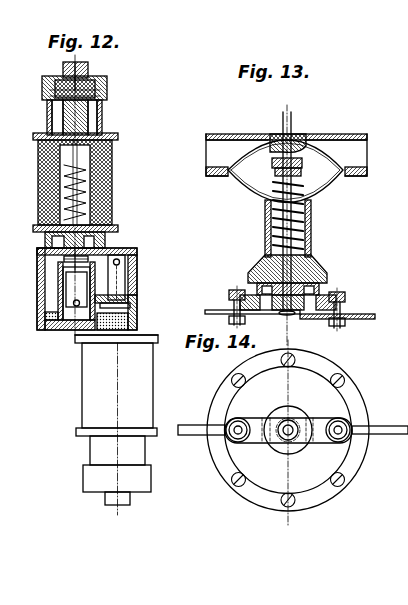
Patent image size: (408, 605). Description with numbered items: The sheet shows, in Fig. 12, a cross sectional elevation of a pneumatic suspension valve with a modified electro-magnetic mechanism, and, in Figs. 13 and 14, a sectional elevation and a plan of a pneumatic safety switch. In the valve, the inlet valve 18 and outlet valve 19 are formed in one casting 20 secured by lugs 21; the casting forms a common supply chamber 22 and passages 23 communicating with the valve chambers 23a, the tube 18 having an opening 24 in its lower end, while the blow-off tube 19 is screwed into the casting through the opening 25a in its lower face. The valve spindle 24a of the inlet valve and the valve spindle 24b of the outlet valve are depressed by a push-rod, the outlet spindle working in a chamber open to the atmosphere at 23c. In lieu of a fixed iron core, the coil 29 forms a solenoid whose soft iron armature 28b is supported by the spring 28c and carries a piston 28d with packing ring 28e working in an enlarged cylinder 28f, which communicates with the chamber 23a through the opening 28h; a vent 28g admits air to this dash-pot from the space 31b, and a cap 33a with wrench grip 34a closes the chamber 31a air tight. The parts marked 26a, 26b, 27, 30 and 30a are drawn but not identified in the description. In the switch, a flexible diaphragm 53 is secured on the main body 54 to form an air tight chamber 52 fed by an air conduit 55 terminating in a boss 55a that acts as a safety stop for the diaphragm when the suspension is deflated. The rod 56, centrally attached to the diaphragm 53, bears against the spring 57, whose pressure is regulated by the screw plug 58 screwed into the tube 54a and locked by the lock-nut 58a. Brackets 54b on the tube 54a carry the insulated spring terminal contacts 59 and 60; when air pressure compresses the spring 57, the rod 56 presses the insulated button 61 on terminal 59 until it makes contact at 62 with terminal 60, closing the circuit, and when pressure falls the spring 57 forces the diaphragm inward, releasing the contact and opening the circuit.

In FIG. 12, the inlet valve 18 is at (72, 296).
In FIG. 12, the outlet valve 19 is at (122, 284).
In FIG. 12, the casting 20 is at (137, 271).
In FIG. 12, the lugs 21 is at (56, 318).
In FIG. 12, the supply chamber 22 is at (66, 290).
In FIG. 12, the passages 23 is at (58, 277).
In FIG. 12, the valve chamber 23a is at (75, 258).
In FIG. 12, the atmospheric opening 23c is at (137, 315).
In FIG. 12, the opening 24 is at (74, 304).
In FIG. 12, the valve spindle 24a is at (60, 245).
In FIG. 12, the valve spindle 24b is at (116, 346).
In FIG. 12, the opening 25a is at (152, 337).
In FIG. 12, the lower spring 26a is at (62, 266).
In FIG. 12, the upper spring 26b is at (88, 184).
In FIG. 12, the flange plate 27 is at (40, 230).
In FIG. 12, the armature 28b is at (88, 125).
In FIG. 12, the spring 28c is at (50, 92).
In FIG. 12, the piston 28d is at (105, 84).
In FIG. 12, the packing ring 28e is at (50, 105).
In FIG. 12, the cylinder 28f is at (117, 450).
In FIG. 12, the vent 28g is at (102, 108).
In FIG. 12, the opening 28h is at (105, 236).
In FIG. 12, the coil 29 is at (40, 187).
In FIG. 12, the conduit 30 is at (61, 429).
In FIG. 12, the conduit branch 30a is at (11, 450).
In FIG. 12, the chamber 31a is at (70, 78).
In FIG. 12, the space 31b is at (52, 122).
In FIG. 12, the cap 33a is at (45, 80).
In FIG. 12, the wrench grip 34a is at (88, 66).
In FIG. 13, the air tight chamber 52 is at (294, 164).
In FIG. 13, the flexible diaphragm 53 is at (295, 211).
In FIG. 13, the main body 54 is at (340, 136).
In FIG. 13, the tube 54a is at (266, 223).
In FIG. 14, the tube 54a is at (325, 368).
In FIG. 13, the brackets 54b is at (229, 292).
In FIG. 14, the brackets 54b is at (242, 419).
In FIG. 13, the air conduit 55 is at (291, 120).
In FIG. 13, the boss 55a is at (270, 140).
In FIG. 13, the rod 56 is at (250, 278).
In FIG. 13, the spring 57 is at (312, 215).
In FIG. 13, the screw plug 58 is at (316, 262).
In FIG. 14, the screw plug 58 is at (280, 448).
In FIG. 13, the lock-nut 58a is at (322, 287).
In FIG. 13, the spring terminal contact 59 is at (283, 302).
In FIG. 14, the spring terminal contact 59 is at (264, 440).
In FIG. 13, the spring terminal contact 60 is at (322, 320).
In FIG. 14, the spring terminal contact 60 is at (332, 441).
In FIG. 13, the insulated button 61 is at (276, 314).
In FIG. 13, the contact point 62 is at (288, 316).
In FIG. 14, the contact point 62 is at (292, 452).